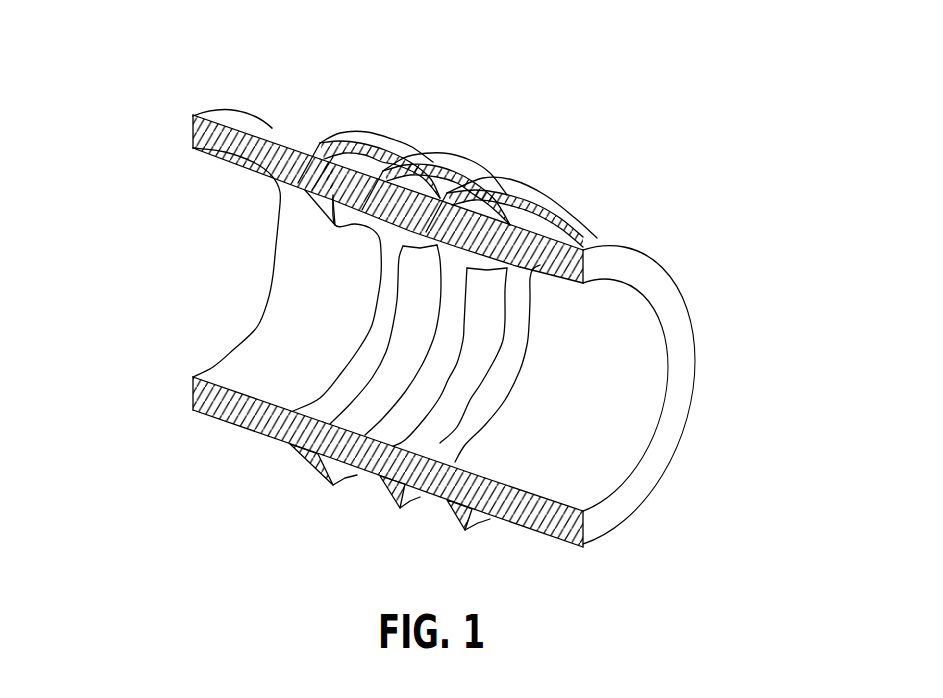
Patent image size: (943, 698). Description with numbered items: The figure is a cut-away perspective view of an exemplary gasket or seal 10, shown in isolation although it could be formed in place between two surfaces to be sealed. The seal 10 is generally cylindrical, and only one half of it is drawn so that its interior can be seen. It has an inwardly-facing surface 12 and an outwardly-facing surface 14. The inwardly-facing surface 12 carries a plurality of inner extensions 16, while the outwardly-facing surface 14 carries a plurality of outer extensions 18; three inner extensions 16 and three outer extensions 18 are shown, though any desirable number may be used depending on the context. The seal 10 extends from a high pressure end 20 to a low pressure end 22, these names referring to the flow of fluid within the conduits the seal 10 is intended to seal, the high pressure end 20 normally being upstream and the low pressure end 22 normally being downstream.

The seal 10 is at (662, 161).
The inwardly-facing surface 12 is at (541, 387).
The outwardly-facing surface 14 is at (240, 122).
The inner extensions 16 is at (333, 222).
The outer extensions 18 is at (318, 135).
The high pressure end 20 is at (714, 441).
The low pressure end 22 is at (200, 315).